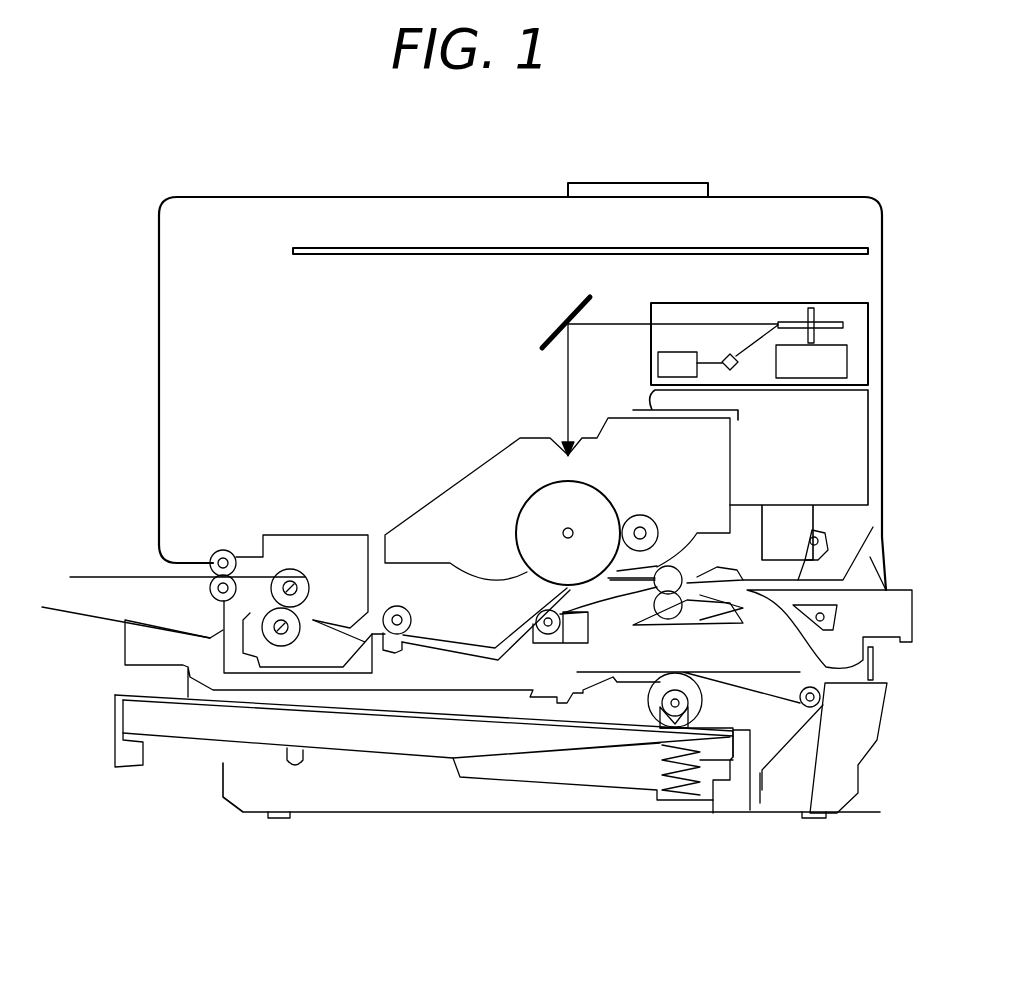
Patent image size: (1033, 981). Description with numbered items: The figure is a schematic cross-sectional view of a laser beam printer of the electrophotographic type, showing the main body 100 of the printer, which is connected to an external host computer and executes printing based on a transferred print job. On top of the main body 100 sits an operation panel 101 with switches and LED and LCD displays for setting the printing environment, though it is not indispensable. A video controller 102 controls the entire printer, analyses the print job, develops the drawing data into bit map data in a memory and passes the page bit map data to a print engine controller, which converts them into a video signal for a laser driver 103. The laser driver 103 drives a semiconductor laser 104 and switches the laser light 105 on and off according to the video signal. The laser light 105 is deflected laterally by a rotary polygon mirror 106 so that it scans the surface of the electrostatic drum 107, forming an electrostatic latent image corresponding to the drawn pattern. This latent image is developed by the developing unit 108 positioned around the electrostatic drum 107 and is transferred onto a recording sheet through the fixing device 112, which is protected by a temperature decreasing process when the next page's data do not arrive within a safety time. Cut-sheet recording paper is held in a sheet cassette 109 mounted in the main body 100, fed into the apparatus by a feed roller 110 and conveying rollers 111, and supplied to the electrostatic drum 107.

The main body 100 is at (798, 197).
The operation panel 101 is at (654, 183).
The video controller 102 is at (842, 248).
The laser driver 103 is at (658, 365).
The semiconductor laser 104 is at (738, 370).
The laser light 105 is at (739, 324).
The rotary polygon mirror 106 is at (838, 322).
The electrostatic drum 107 is at (518, 511).
The developing unit 108 is at (428, 516).
The sheet cassette 109 is at (113, 730).
The feed roller 110 is at (654, 708).
The conveying rollers 111 is at (797, 707).
The fixing device 112 is at (314, 542).